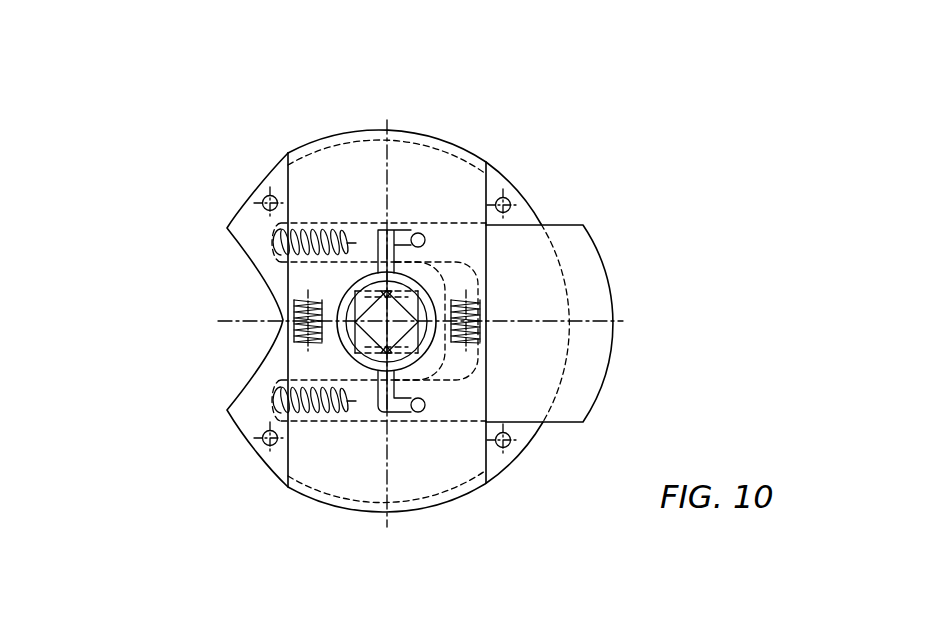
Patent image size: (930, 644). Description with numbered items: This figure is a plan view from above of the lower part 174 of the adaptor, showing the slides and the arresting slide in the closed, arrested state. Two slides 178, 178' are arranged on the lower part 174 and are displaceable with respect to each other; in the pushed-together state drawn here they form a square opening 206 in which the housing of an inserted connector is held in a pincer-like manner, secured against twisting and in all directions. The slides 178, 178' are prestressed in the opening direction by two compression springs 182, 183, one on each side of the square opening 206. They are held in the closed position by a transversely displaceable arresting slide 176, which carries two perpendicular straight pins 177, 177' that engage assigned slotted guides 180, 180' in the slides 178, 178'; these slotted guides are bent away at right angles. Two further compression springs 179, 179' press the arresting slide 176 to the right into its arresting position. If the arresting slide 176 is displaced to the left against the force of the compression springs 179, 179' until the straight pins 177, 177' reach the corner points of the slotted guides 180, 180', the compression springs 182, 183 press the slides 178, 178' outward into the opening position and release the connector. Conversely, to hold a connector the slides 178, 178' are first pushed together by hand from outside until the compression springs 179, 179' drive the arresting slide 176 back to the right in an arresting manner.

The lower part 174 is at (245, 222).
The arresting slide 176 is at (592, 283).
The straight pin 177 is at (442, 150).
The straight pin 177' is at (433, 501).
The slide 178 is at (422, 188).
The slide 178' is at (417, 462).
The compression spring 179 is at (369, 157).
The compression spring 179' is at (360, 490).
The slotted guide 180 is at (388, 208).
The slotted guide 180' is at (368, 492).
The compression spring 182 is at (290, 336).
The compression spring 183 is at (479, 334).
The square opening 206 is at (368, 329).